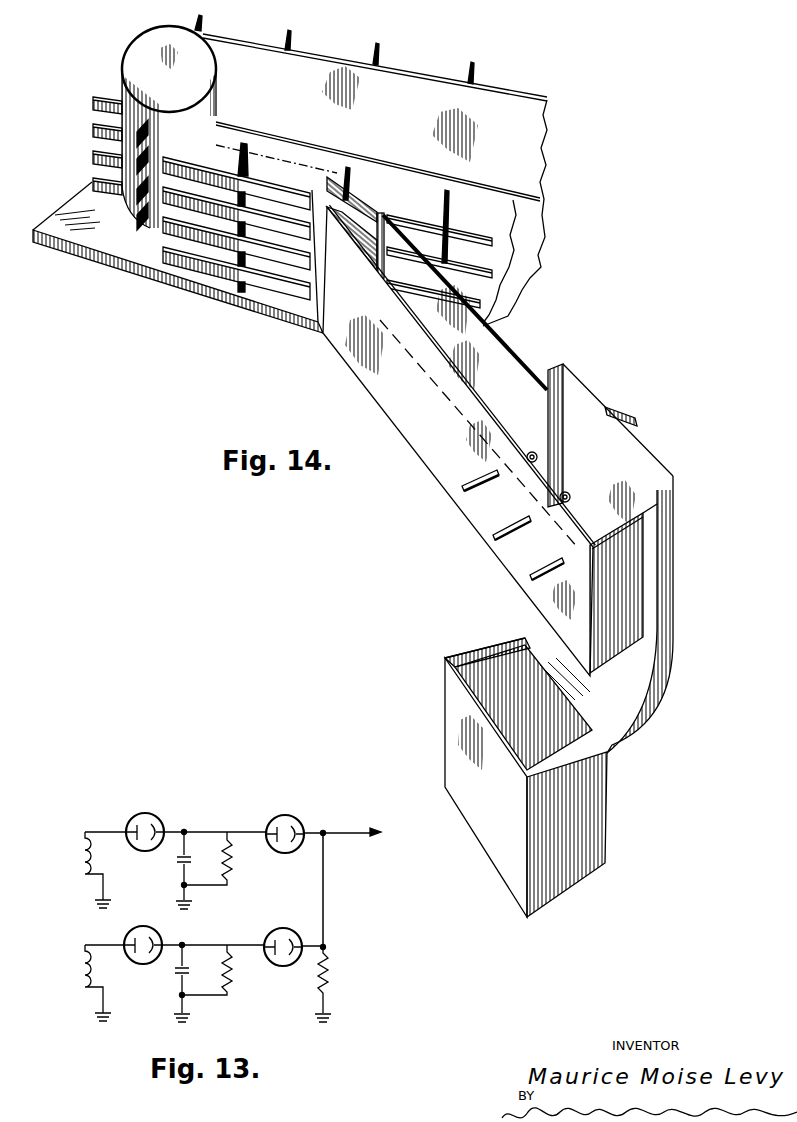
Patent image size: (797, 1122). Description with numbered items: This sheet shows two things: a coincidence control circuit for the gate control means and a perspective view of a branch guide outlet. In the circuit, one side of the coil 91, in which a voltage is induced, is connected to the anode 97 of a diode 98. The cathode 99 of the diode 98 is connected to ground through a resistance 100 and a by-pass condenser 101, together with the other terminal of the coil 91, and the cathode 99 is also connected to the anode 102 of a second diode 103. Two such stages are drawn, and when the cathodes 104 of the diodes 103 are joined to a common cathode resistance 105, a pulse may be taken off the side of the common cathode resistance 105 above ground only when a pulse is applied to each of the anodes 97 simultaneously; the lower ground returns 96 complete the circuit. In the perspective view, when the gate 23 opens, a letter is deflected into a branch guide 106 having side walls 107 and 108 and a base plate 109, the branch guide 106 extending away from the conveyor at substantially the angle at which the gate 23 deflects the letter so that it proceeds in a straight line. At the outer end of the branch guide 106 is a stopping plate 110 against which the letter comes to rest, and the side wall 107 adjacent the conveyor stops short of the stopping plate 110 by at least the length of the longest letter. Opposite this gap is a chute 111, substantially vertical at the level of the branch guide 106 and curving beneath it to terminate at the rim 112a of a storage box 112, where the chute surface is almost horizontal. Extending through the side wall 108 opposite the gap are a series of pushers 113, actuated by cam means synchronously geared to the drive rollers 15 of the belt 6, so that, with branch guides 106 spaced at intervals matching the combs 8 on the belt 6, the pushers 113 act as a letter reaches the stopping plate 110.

In FIG. 14, the belt 6 is at (547, 98).
In FIG. 14, the combs 8 is at (97, 96).
In FIG. 14, the drive rollers 15 is at (185, 73).
In FIG. 14, the gate 23 is at (372, 208).
In FIG. 14, the branch guide 106 is at (353, 343).
In FIG. 14, the side wall 107 is at (483, 356).
In FIG. 14, the side wall 108 is at (407, 418).
In FIG. 14, the base plate 109 is at (427, 398).
In FIG. 14, the stopping plate 110 is at (630, 592).
In FIG. 14, the chute 111 is at (643, 467).
In FIG. 14, the storage box 112 is at (590, 817).
In FIG. 14, the rim 112a is at (523, 626).
In FIG. 14, the pushers 113 is at (527, 519).
In FIG. 13, the coil 91 is at (80, 841).
In FIG. 13, the coil ground 96 is at (100, 878).
In FIG. 13, the anode 97 is at (133, 819).
In FIG. 13, the diode 98 is at (147, 826).
In FIG. 13, the cathode 99 is at (157, 828).
In FIG. 13, the resistance 100 is at (235, 860).
In FIG. 13, the by-pass condenser 101 is at (177, 858).
In FIG. 13, the anode 102 is at (270, 827).
In FIG. 13, the second diode 103 is at (292, 824).
In FIG. 13, the cathodes 104 is at (302, 831).
In FIG. 13, the common cathode resistance 105 is at (331, 975).